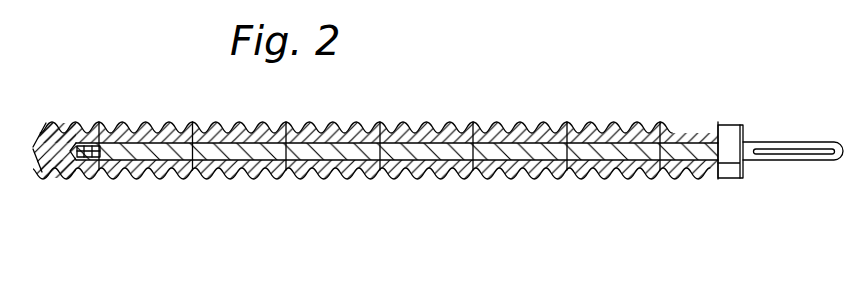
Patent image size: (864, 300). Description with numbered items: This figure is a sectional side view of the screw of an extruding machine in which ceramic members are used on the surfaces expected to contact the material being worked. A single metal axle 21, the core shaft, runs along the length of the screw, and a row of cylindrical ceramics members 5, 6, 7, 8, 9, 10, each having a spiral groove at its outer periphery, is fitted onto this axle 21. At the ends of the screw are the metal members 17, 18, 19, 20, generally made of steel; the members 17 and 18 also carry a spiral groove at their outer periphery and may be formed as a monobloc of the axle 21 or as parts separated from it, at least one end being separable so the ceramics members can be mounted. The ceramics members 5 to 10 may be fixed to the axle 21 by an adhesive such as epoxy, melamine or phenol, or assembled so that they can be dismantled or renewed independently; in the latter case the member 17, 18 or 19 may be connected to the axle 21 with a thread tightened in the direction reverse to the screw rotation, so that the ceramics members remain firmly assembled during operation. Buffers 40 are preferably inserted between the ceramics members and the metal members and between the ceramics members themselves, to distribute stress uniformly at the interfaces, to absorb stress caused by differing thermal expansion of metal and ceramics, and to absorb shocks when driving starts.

The buffer 40 is at (206, 124).
The metal axle 21 is at (520, 150).
The screw end member 17 is at (68, 180).
The cylindrical ceramics member 10 is at (158, 180).
The cylindrical ceramics member 9 is at (247, 181).
The cylindrical ceramics member 8 is at (332, 181).
The cylindrical ceramics member 7 is at (427, 179).
The cylindrical ceramics member 6 is at (520, 179).
The cylindrical ceramics member 5 is at (608, 181).
The screw end member 18 is at (685, 179).
The metal screw member 19 is at (727, 180).
The metal screw member 20 is at (802, 162).